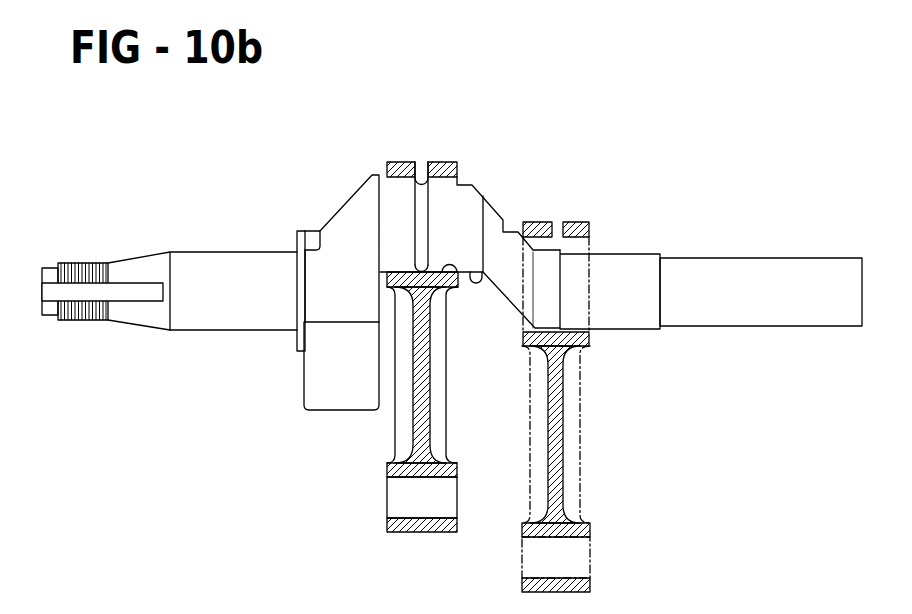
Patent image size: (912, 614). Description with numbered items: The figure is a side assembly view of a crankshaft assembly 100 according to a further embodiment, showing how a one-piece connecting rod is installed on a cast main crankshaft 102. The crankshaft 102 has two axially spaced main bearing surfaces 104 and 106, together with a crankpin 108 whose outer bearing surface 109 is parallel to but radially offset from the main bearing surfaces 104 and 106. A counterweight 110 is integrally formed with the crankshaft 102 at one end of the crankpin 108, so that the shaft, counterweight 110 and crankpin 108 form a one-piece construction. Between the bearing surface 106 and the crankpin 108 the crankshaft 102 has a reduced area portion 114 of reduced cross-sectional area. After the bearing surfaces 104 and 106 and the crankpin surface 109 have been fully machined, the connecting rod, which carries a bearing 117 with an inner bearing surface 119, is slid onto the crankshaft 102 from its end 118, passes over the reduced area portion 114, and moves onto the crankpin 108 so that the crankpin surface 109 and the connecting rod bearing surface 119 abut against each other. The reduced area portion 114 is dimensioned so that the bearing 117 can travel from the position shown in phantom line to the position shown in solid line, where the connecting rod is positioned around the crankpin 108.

The crankshaft assembly 100 is at (108, 207).
The main crankshaft 102 is at (221, 252).
The main bearing surface 104 is at (237, 330).
The main bearing surface 106 is at (636, 330).
The crankpin 108 is at (393, 211).
The outer bearing surface 109 is at (483, 196).
The counterweight 110 is at (347, 402).
The reduced area portion 114 is at (503, 222).
The bearing 117 is at (442, 162).
The end of the crankshaft 118 is at (864, 275).
The inner bearing surface 119 is at (458, 273).